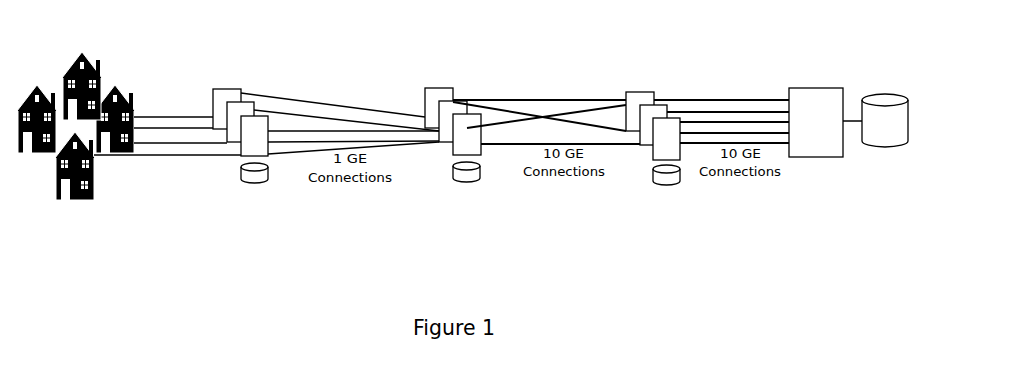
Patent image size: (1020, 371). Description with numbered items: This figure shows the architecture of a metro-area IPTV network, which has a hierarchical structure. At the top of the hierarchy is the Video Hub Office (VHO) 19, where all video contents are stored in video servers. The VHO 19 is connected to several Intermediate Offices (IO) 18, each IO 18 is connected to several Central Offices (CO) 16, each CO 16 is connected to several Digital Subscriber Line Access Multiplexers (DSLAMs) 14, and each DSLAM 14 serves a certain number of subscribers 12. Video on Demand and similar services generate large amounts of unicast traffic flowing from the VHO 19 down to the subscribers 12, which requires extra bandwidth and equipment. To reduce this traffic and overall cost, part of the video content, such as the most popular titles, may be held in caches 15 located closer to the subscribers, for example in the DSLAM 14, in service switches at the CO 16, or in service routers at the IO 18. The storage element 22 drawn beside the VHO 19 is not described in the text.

The subscribers 12 is at (74, 50).
The Digital Subscriber Line Access Multiplexer 14 is at (235, 60).
The caches 15 is at (257, 183).
The Central Office 16 is at (447, 53).
The Intermediate Office 18 is at (641, 60).
The Video Hub Office 19 is at (813, 50).
The content storage 22 is at (885, 98).